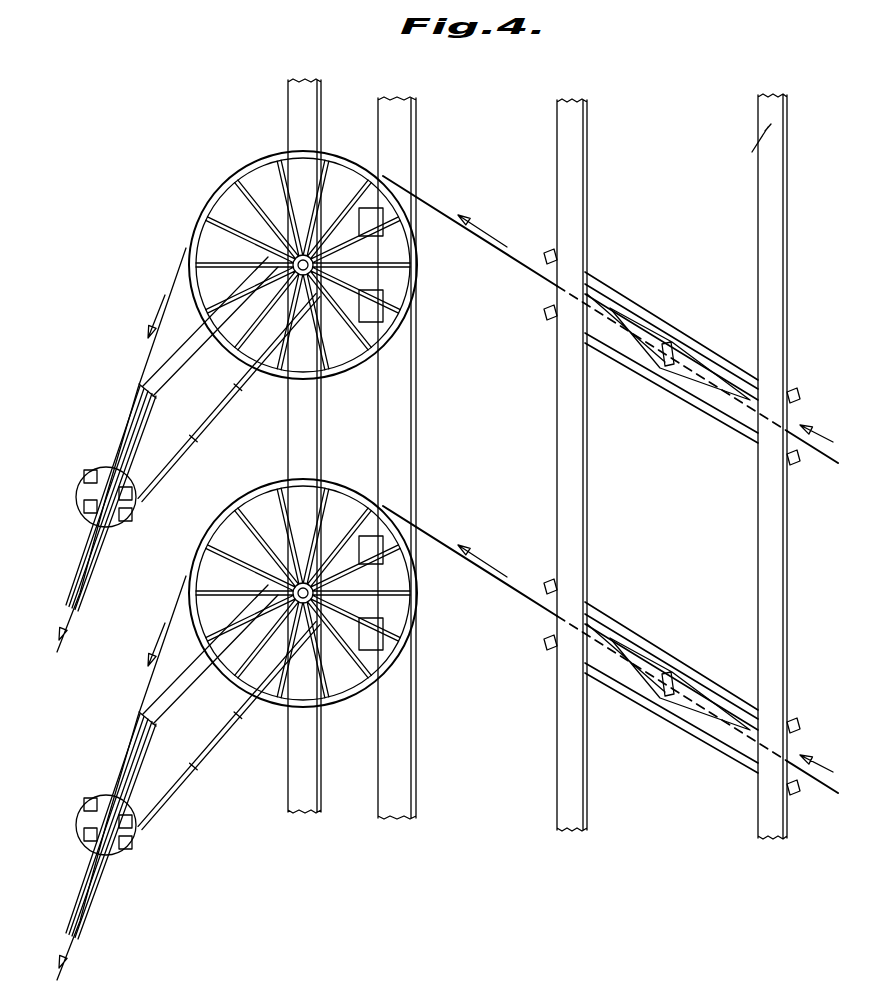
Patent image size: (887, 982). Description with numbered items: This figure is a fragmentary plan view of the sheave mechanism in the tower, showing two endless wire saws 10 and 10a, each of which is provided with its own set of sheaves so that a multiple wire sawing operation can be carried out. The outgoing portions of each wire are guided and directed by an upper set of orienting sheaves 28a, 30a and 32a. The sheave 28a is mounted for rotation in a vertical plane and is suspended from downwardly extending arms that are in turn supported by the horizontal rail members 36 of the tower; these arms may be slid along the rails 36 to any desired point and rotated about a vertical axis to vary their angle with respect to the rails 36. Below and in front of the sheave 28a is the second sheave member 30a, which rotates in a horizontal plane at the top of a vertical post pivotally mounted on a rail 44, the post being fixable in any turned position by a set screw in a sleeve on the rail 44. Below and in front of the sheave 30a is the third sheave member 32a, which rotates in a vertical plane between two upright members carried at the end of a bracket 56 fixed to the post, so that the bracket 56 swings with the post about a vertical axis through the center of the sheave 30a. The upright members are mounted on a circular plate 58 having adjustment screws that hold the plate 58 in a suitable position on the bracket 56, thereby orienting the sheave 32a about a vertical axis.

The endless wire saw 10 is at (518, 264).
The saw 10a is at (452, 554).
The orienting sheave 28a is at (630, 323).
The second sheave member 30a is at (416, 280).
The third sheave member 32a is at (90, 573).
The horizontal rail members 36 is at (578, 197).
The rail 44 is at (296, 754).
The bracket 56 is at (218, 408).
The circular plate 58 is at (138, 502).